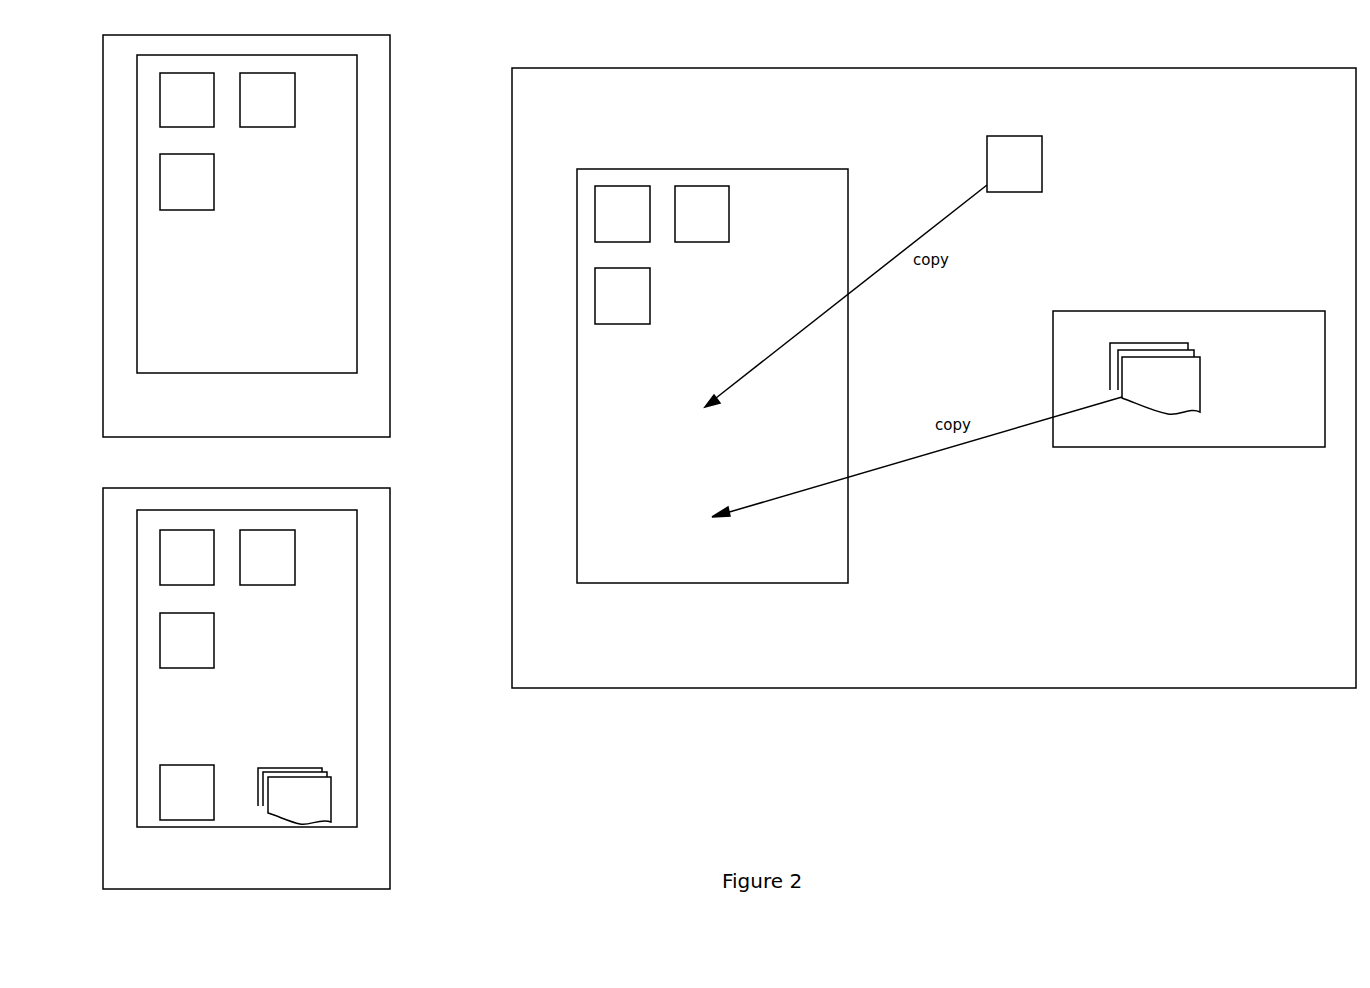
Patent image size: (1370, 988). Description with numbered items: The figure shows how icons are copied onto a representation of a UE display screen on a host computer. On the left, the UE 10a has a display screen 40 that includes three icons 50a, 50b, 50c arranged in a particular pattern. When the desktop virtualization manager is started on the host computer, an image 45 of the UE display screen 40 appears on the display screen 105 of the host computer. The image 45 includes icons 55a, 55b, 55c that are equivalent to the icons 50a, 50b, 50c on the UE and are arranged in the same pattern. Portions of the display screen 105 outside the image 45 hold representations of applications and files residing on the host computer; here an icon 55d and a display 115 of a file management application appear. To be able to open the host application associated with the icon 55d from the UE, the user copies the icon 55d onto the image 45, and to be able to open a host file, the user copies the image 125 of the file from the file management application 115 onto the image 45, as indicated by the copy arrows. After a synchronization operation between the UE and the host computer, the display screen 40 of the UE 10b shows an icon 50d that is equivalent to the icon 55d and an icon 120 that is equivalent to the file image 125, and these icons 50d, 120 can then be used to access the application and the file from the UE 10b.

The UE 10a is at (390, 378).
The UE 10b is at (390, 832).
The display screen 40 is at (243, 373).
The icon 50a is at (214, 127).
The icon 50b is at (268, 127).
The icon 50c is at (186, 210).
The icon 50d is at (214, 765).
The icon 120 is at (282, 768).
The display screen 105 is at (934, 688).
The image 45 is at (713, 583).
The icon 55a is at (650, 242).
The icon 55b is at (705, 242).
The icon 55c is at (622, 324).
The icon 55d is at (1033, 192).
The display of a file management application 115 is at (1188, 447).
The image of the file 125 is at (1200, 383).